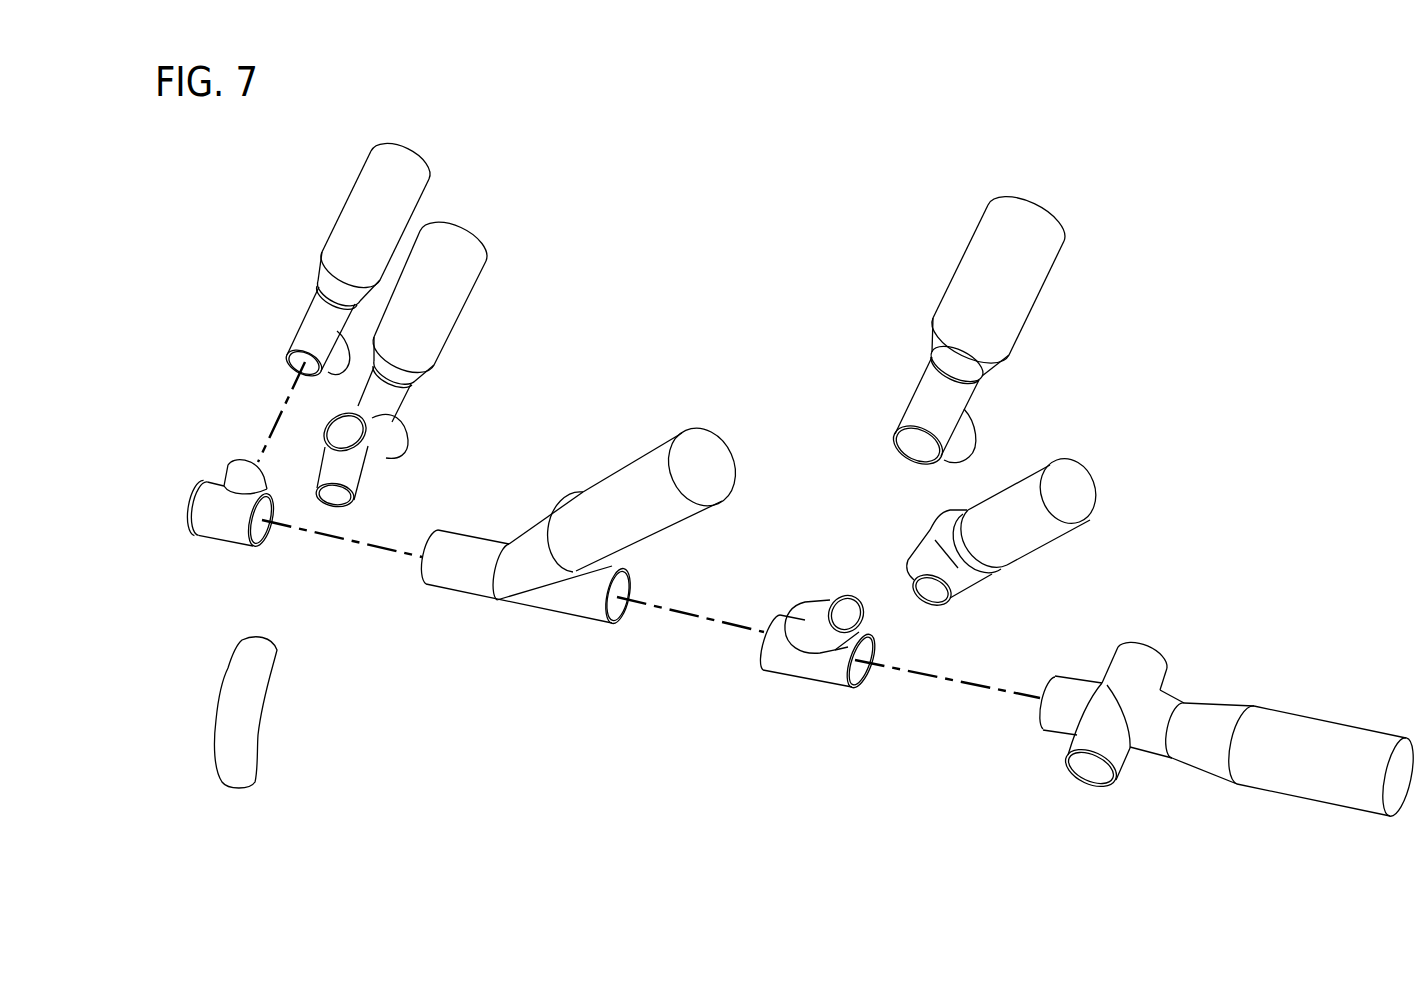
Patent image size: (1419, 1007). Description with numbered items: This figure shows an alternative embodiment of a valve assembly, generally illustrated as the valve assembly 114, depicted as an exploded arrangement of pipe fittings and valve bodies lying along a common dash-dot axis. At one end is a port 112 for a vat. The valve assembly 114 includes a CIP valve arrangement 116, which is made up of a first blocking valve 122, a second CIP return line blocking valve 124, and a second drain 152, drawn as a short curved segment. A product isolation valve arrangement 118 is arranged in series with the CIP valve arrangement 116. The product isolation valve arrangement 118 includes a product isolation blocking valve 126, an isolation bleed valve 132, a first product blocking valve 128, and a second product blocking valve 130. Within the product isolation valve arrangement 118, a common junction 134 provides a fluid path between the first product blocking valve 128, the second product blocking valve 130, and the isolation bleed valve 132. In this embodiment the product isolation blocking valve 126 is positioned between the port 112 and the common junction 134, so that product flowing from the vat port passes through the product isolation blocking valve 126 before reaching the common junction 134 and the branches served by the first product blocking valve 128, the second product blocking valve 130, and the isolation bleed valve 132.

The port 112 is at (213, 488).
The valve assembly 114 is at (712, 250).
The CIP valve arrangement 116 is at (456, 420).
The product isolation valve arrangement 118 is at (716, 707).
The first blocking valve 122 is at (407, 198).
The second CIP return line blocking valve 124 is at (457, 285).
The product isolation blocking valve 126 is at (633, 468).
The first product blocking valve 128 is at (1040, 537).
The second product blocking valve 130 is at (1215, 710).
The isolation bleed valve 132 is at (1020, 300).
The common junction 134 is at (827, 667).
The second drain 152 is at (255, 702).